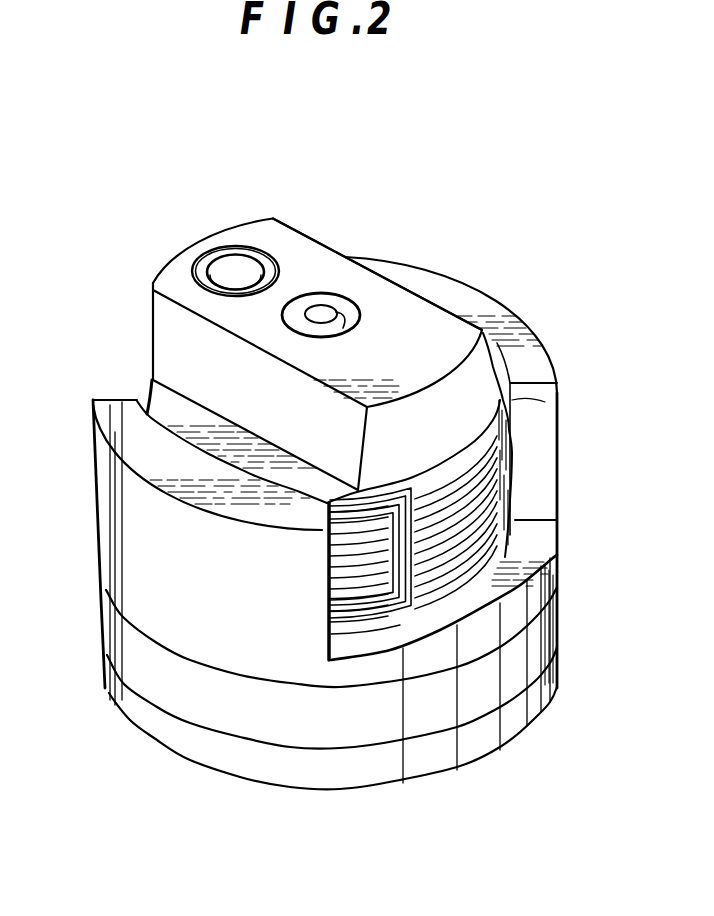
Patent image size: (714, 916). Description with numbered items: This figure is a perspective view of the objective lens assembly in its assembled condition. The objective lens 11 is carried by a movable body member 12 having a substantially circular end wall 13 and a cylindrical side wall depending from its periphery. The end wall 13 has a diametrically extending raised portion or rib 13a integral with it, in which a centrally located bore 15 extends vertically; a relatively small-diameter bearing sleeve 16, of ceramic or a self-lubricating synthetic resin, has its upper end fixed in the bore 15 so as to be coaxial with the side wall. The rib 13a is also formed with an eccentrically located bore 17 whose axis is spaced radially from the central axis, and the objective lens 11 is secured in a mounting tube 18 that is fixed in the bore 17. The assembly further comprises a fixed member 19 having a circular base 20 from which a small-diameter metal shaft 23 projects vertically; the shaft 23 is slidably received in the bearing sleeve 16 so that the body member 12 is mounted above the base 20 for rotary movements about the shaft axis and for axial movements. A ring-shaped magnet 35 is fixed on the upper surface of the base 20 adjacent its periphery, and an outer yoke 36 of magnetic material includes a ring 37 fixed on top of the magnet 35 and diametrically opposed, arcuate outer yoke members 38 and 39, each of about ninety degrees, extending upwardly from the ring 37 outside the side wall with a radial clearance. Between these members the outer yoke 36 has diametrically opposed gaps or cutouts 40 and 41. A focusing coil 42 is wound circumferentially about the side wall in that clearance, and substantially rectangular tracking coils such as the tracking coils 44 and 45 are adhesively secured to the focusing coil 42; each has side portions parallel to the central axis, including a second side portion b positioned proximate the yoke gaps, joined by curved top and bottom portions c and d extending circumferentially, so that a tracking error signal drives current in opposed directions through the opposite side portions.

The objective lens 11 is at (236, 265).
The mounting tube 18 is at (207, 263).
The bore 17 is at (236, 292).
The bearing sleeve 16 is at (323, 298).
The bore 15 is at (342, 327).
The shaft 23 is at (348, 318).
The outer yoke member 39 is at (418, 266).
The raised portion or rib 13a is at (450, 333).
The gap or cutout 40 is at (540, 390).
The tracking coil 45 is at (545, 402).
The movable body member 12 is at (463, 432).
The second side portion b is at (500, 492).
The focusing coil 42 is at (520, 537).
The ring 37 is at (540, 590).
The gap or cutout 41 is at (108, 400).
The end wall 13 is at (160, 407).
The outer yoke member 38 is at (130, 487).
The outer yoke 36 is at (97, 530).
The fixed member 19 is at (101, 620).
The magnet 35 is at (138, 660).
The base 20 is at (137, 703).
The top portion c is at (375, 520).
The bottom portion d is at (345, 618).
The tracking coil 44 is at (330, 648).